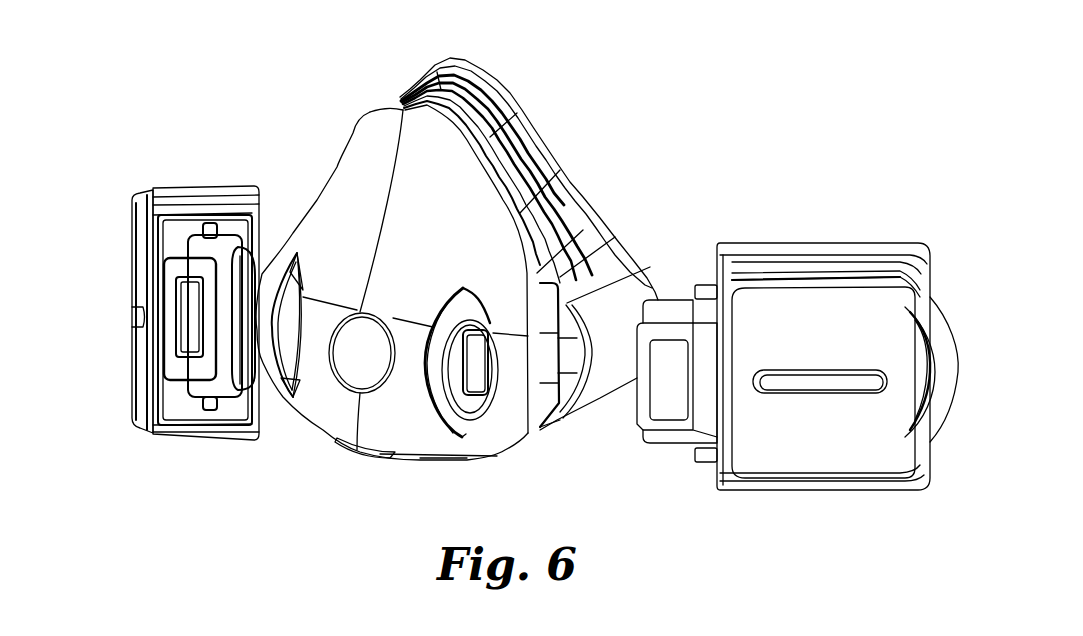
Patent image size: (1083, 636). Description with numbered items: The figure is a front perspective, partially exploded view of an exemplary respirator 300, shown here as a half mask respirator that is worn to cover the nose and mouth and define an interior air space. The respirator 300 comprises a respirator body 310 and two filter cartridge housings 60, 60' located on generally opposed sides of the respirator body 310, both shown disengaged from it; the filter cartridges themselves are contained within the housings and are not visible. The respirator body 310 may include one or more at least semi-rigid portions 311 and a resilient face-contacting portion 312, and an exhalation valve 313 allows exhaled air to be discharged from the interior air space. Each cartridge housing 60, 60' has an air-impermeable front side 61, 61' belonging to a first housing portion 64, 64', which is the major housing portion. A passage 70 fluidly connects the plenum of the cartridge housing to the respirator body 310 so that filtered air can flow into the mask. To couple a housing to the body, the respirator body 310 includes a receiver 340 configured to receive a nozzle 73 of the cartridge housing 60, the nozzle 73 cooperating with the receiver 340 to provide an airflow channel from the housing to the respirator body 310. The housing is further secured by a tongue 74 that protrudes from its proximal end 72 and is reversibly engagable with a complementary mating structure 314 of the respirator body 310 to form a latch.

The respirator 300 is at (356, 55).
The respirator body 310 is at (488, 57).
The semi-rigid portion 311 is at (417, 447).
The resilient face-contacting portion 312 is at (572, 220).
The exhalation valve 313 is at (370, 458).
The complementary mating structure 314 is at (487, 377).
The receiver 340 is at (543, 403).
The passage 70 is at (247, 368).
The proximal end 72 is at (678, 462).
The nozzle 73 is at (673, 300).
The tongue 74 is at (643, 424).
The cartridge housing 60 is at (823, 392).
The front side 61 is at (945, 359).
The first housing portion 64 is at (859, 382).
The cartridge housing 60' is at (164, 306).
The front side 61' is at (159, 320).
The first housing portion 64' is at (107, 351).